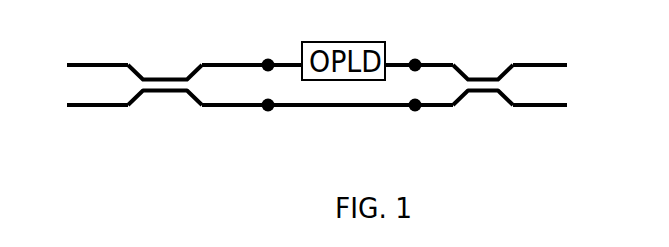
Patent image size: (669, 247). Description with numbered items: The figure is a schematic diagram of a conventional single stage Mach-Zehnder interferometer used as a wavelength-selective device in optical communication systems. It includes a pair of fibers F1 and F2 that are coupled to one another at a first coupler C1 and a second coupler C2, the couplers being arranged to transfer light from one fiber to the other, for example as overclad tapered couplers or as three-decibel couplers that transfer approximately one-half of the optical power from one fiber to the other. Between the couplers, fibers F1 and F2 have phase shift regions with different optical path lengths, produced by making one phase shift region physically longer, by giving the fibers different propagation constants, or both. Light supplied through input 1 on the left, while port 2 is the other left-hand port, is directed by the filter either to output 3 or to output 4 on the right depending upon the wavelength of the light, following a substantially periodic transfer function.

The input 1 is at (86, 65).
The input port 2 is at (86, 105).
The output 3 is at (553, 65).
The output 4 is at (553, 105).
The first coupler C1 is at (163, 78).
The second coupler C2 is at (478, 77).
The fiber F1 is at (395, 62).
The fiber F2 is at (402, 107).